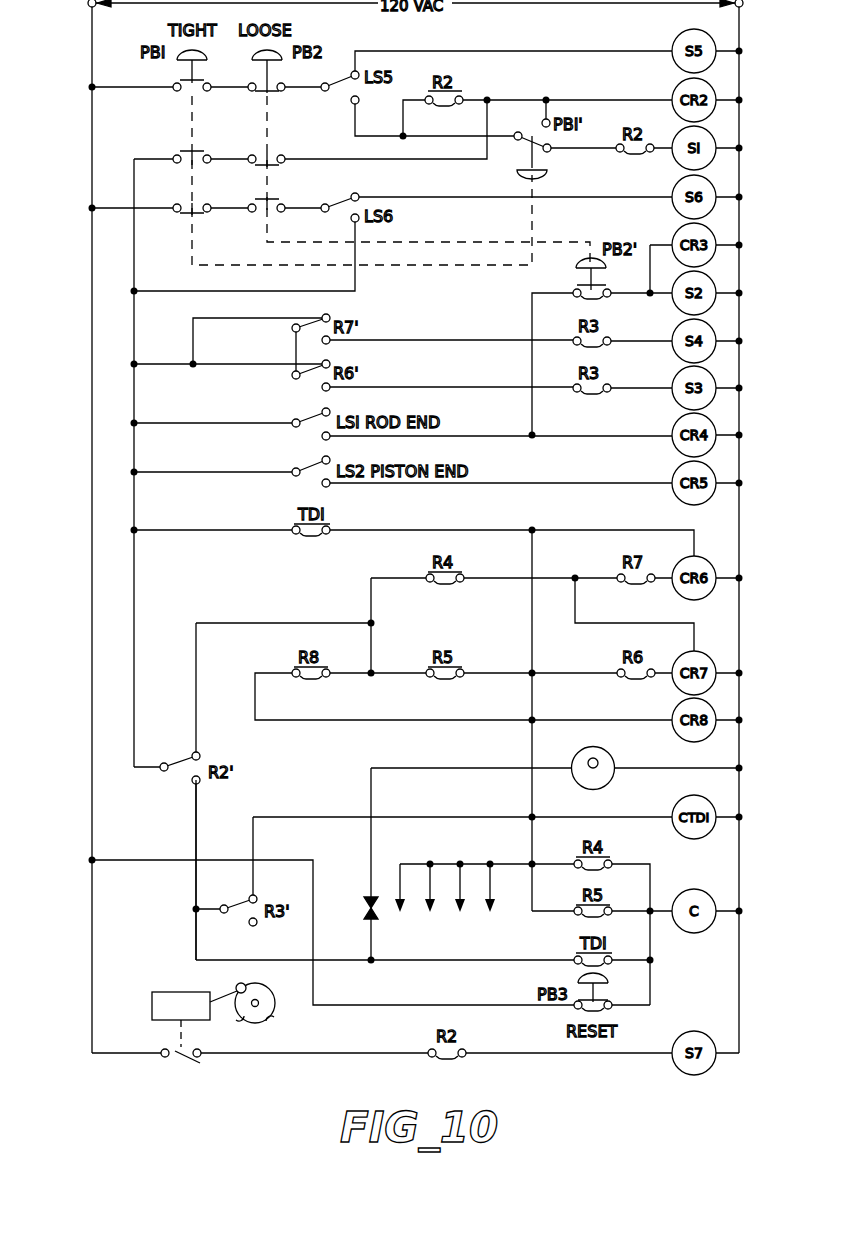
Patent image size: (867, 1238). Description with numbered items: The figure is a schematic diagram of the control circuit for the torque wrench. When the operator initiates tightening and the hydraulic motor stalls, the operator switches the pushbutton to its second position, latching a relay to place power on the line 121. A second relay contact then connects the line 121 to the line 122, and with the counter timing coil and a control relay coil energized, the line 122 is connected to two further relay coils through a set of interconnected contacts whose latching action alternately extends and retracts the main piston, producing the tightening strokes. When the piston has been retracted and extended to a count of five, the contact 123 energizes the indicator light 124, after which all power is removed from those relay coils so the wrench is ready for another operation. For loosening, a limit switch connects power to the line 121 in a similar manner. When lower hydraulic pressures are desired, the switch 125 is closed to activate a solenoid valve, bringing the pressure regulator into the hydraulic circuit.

The line 121 is at (134, 578).
The line 122 is at (196, 882).
The contact 123 is at (365, 908).
The indicator light 124 is at (605, 786).
The switch 125 is at (177, 1060).